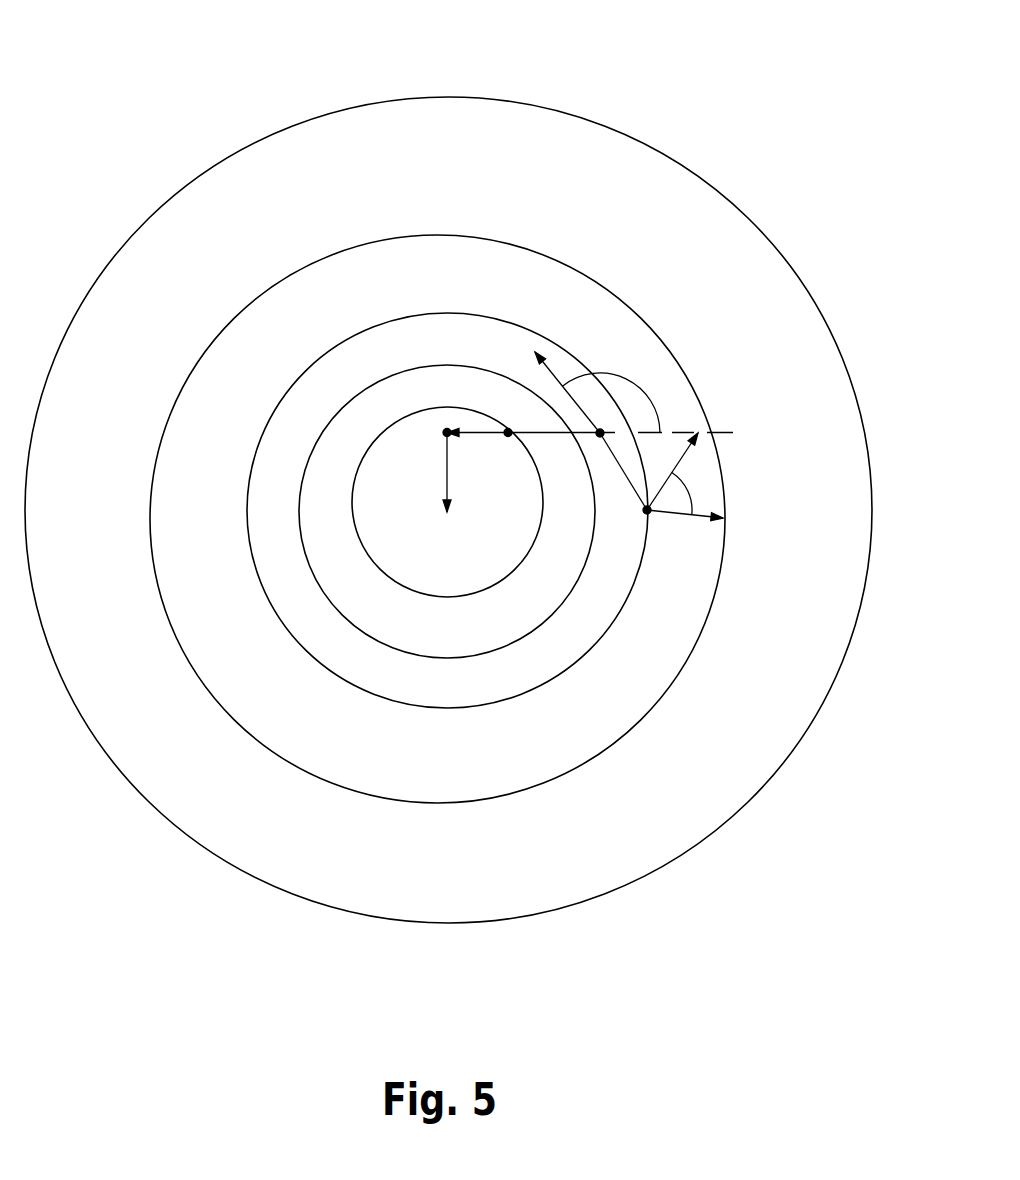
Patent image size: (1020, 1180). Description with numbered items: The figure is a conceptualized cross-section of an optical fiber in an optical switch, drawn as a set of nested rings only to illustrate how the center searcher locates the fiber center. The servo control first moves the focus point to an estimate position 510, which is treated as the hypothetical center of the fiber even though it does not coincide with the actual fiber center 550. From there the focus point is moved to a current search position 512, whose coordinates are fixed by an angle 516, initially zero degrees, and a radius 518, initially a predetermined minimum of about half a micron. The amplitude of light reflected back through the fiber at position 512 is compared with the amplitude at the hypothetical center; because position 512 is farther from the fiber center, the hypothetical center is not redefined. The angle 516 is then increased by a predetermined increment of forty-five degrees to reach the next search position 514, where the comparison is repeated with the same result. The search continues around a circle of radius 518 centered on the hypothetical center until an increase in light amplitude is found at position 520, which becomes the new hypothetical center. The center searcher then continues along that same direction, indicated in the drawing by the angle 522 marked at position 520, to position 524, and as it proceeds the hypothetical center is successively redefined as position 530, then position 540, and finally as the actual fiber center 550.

The estimate position 510 is at (647, 512).
The current search position 512 is at (730, 518).
The next search position 514 is at (705, 428).
The angle 516 is at (716, 487).
The radius 518 is at (697, 528).
The position 520 is at (600, 435).
The angle 522 is at (627, 373).
The position 524 is at (537, 350).
The position 530 is at (508, 430).
The position 540 is at (440, 432).
The fiber center 550 is at (447, 516).